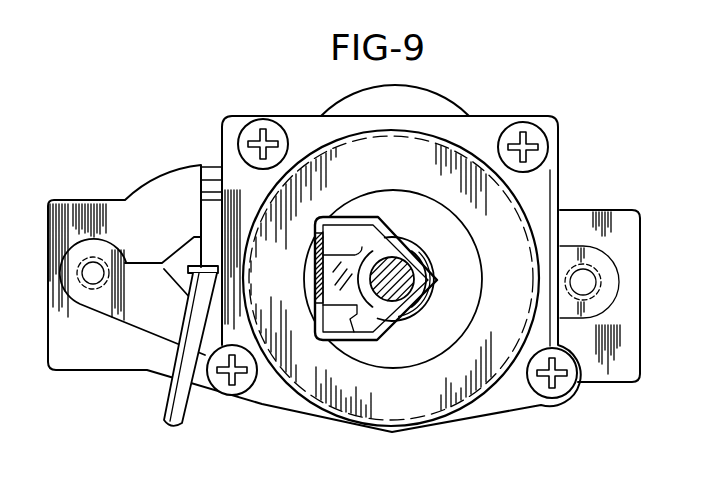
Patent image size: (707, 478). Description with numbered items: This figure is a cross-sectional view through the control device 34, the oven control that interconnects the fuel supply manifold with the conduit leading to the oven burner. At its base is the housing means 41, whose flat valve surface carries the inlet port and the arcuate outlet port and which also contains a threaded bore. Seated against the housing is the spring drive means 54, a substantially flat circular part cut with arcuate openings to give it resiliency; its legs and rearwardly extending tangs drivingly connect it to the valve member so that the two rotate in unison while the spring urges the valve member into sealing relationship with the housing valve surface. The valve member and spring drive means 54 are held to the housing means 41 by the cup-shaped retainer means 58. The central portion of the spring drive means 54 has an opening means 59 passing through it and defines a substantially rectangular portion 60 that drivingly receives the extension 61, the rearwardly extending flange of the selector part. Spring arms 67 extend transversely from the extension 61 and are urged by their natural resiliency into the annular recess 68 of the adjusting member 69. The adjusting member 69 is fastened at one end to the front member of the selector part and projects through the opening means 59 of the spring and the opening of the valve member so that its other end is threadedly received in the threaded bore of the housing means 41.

The control device 34 is at (602, 80).
The housing means 41 is at (174, 178).
The spring drive means 54 is at (416, 357).
The cup-shaped retainer means 58 is at (519, 202).
The opening means 59 is at (392, 242).
The rectangular portion 60 is at (338, 262).
The extension 61 is at (315, 291).
The spring arms 67 is at (397, 238).
The annular recess 68 is at (418, 279).
The adjusting member 69 is at (421, 258).